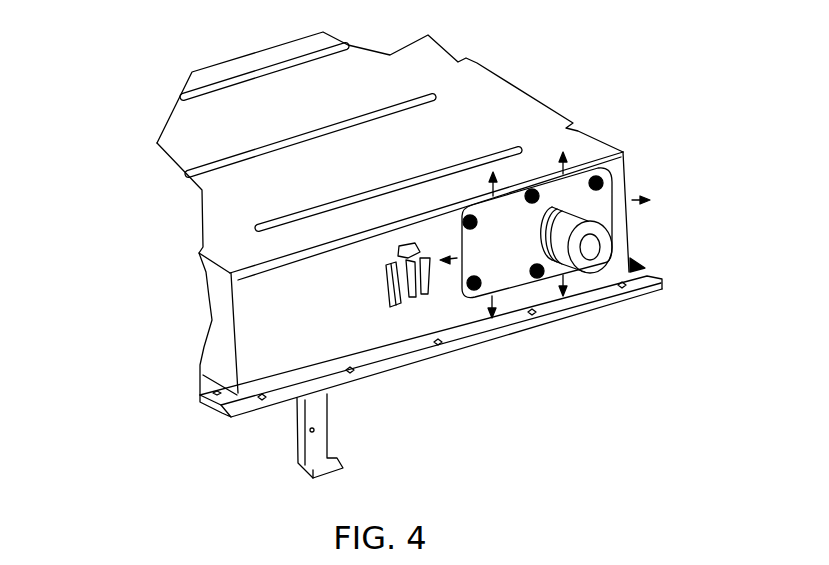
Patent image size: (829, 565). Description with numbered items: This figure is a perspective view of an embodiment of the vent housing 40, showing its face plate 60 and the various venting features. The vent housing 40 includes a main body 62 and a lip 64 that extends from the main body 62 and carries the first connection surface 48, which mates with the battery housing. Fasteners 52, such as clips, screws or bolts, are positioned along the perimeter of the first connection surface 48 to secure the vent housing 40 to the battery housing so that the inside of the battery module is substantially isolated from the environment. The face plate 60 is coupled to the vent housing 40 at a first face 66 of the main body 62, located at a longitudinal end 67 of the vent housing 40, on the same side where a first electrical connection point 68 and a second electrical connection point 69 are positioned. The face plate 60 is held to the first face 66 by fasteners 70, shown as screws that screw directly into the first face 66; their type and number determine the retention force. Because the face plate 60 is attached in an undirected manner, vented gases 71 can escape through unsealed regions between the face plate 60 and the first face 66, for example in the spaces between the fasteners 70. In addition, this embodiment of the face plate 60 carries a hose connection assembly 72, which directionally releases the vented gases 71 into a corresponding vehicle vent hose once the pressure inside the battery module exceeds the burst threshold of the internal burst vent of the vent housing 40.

The vent housing 40 is at (92, 98).
The first connection surface 48 is at (653, 290).
The fasteners 52 is at (260, 393).
The face plate 60 is at (498, 247).
The main body 62 is at (323, 160).
The lip 64 is at (645, 268).
The first face 66 is at (287, 300).
The longitudinal end 67 is at (636, 376).
The first electrical connection point 68 is at (293, 445).
The second electrical connection point 69 is at (388, 284).
The fasteners 70 is at (465, 216).
The vented gases 71 is at (490, 178).
The hose connection assembly 72 is at (615, 232).